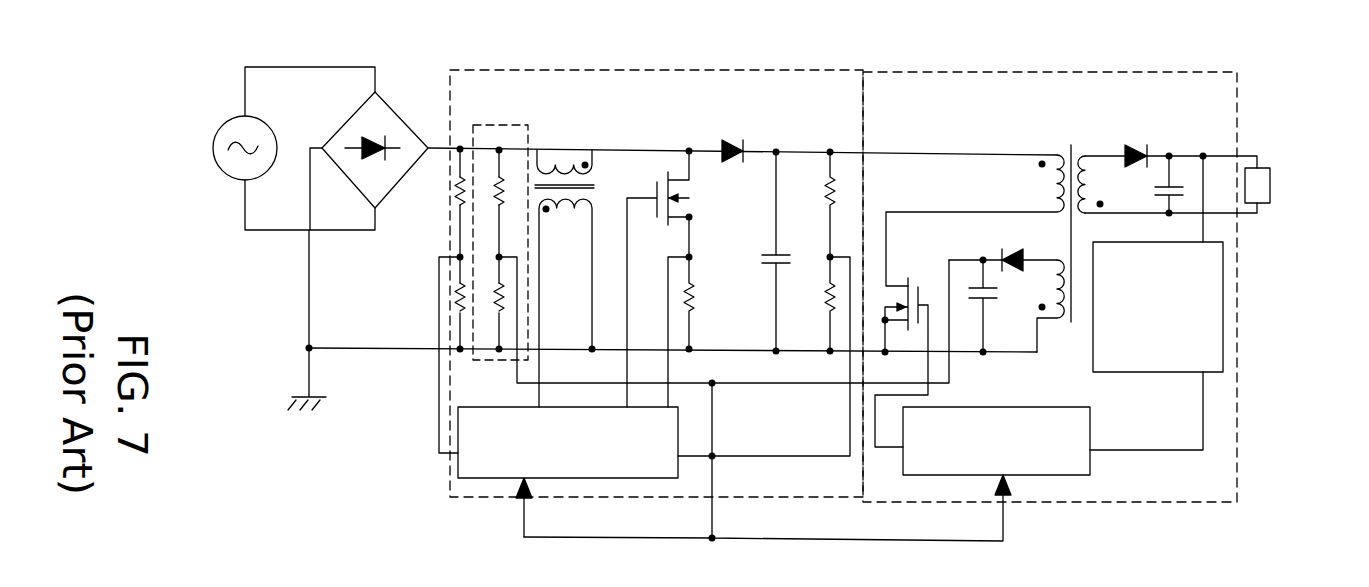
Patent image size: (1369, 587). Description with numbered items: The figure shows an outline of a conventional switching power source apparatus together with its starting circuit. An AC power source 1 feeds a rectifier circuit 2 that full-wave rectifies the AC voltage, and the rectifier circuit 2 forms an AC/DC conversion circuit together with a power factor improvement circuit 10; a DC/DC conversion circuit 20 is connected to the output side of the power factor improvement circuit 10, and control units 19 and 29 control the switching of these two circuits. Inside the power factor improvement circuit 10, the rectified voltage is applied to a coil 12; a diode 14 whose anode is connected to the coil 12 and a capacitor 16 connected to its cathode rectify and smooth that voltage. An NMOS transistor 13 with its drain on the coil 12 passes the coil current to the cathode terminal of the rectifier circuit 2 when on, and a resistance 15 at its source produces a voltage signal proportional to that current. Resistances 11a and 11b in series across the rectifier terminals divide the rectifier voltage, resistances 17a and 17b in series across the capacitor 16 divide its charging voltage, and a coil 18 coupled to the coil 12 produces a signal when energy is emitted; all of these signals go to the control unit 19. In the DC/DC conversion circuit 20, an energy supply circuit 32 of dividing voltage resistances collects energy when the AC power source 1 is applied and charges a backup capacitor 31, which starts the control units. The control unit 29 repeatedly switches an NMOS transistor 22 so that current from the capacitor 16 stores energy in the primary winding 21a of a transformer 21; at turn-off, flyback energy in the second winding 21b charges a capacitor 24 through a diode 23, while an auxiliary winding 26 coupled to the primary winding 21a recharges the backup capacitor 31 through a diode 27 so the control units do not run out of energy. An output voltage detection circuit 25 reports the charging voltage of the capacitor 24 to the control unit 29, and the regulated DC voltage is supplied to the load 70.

The AC power source 1 is at (215, 128).
The rectifier circuit 2 is at (395, 112).
The power factor improvement circuit 10 is at (737, 70).
The resistance 11a is at (455, 198).
The resistance 11b is at (455, 300).
The coil 12 is at (557, 165).
The NMOS transistor 13 is at (680, 178).
The diode 14 is at (735, 145).
The resistance 15 is at (697, 296).
The capacitor 16 is at (768, 254).
The resistance 17a is at (828, 185).
The resistance 17b is at (833, 318).
The coil 18 is at (570, 210).
The control unit 19 is at (640, 478).
The DC/DC conversion circuit 20 is at (1083, 72).
The transformer 21 is at (1067, 150).
The primary winding 21a is at (1060, 195).
The second winding 21b is at (1093, 155).
The NMOS transistor 22 is at (893, 280).
The diode 23 is at (1140, 150).
The capacitor 24 is at (1176, 182).
The output voltage detection circuit 25 is at (1225, 275).
The auxiliary winding 26 is at (1060, 325).
The diode 27 is at (1008, 250).
The control unit 29 is at (1083, 475).
The backup capacitor 31 is at (975, 283).
The energy supply circuit 32 is at (500, 122).
The load 70 is at (1272, 176).